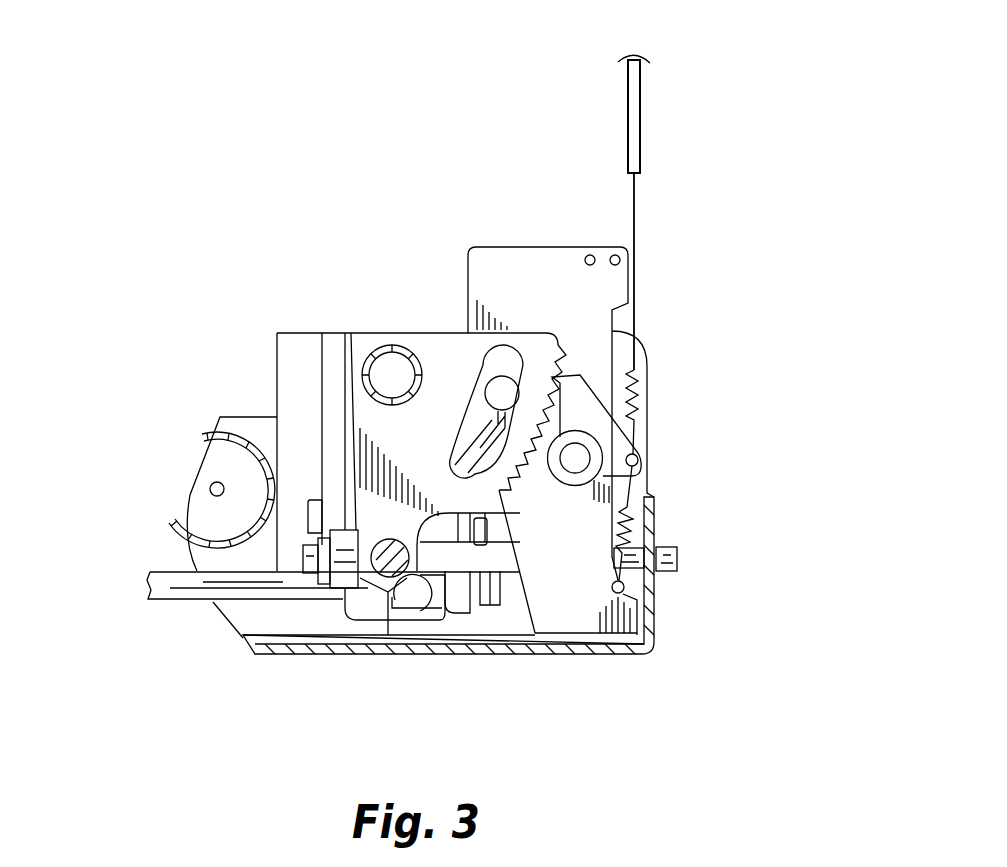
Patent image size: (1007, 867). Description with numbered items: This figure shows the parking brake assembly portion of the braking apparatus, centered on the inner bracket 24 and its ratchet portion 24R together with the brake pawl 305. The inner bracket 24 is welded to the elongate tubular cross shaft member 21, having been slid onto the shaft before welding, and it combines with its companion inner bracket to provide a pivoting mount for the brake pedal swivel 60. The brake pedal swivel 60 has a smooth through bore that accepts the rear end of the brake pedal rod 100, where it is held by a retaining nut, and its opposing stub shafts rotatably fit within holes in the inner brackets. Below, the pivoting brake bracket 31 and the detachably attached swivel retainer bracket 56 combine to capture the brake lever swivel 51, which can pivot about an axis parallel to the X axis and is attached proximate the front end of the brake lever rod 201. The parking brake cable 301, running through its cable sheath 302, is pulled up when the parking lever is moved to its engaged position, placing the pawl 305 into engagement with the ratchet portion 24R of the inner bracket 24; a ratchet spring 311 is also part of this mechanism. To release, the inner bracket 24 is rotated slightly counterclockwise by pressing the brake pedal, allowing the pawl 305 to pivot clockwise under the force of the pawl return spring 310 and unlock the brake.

The cable sheath 302 is at (642, 92).
The parking brake cable 301 is at (636, 222).
The brake pedal rod 100 is at (666, 571).
The inner fixed bracket 24 is at (438, 352).
The ratchet portion 24R is at (567, 356).
The elongate tubular cross shaft member 21 is at (372, 333).
The pawl 305 is at (639, 460).
The ratchet spring 311 is at (636, 378).
The pawl return spring 310 is at (640, 525).
The brake lever rod 201 is at (277, 655).
The brake pedal swivel 60 is at (384, 580).
The pivoting brake bracket 31 is at (372, 612).
The brake lever swivel 51 is at (413, 600).
The swivel retainer bracket 56 is at (433, 620).